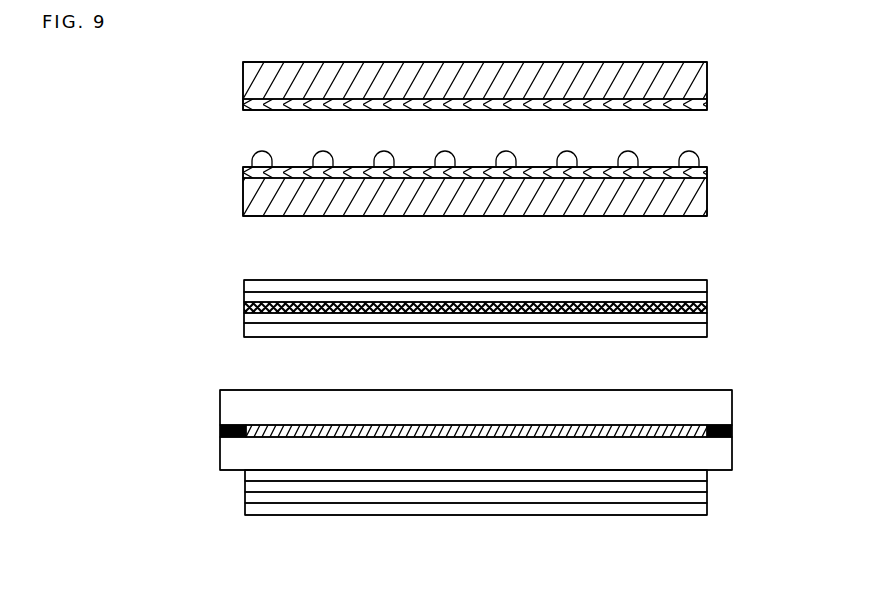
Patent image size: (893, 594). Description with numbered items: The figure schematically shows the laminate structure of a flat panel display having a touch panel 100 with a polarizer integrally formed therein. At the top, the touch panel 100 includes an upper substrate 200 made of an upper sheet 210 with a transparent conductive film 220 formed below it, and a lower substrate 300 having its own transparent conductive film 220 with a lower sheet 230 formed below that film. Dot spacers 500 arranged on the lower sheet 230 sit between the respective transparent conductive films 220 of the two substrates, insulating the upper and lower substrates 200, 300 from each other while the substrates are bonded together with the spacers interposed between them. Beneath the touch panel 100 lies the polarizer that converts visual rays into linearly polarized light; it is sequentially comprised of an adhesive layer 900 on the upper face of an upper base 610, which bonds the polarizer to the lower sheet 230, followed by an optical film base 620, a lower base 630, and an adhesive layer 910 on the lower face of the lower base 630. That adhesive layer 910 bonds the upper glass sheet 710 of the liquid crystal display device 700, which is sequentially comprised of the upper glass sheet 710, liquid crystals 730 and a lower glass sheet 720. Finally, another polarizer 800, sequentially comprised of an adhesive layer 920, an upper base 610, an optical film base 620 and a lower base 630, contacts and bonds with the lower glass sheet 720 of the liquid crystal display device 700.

The touch panel 100 is at (127, 90).
The upper substrate 200 is at (215, 63).
The upper sheet 210 is at (707, 80).
The transparent conductive film 220 is at (707, 100).
The lower sheet 230 is at (707, 200).
The lower substrate 300 is at (215, 173).
The dot spacers 500 is at (698, 155).
The upper base 610 is at (707, 297).
The optical film base 620 is at (707, 307).
The lower base 630 is at (707, 318).
The liquid crystal display device 700 is at (208, 390).
The upper glass sheet 710 is at (722, 405).
The lower glass sheet 720 is at (722, 452).
The liquid crystals 730 is at (732, 430).
The polarizer 800 is at (210, 477).
The adhesive layer 900 is at (707, 285).
The adhesive layer 910 is at (707, 330).
The adhesive layer 920 is at (707, 475).